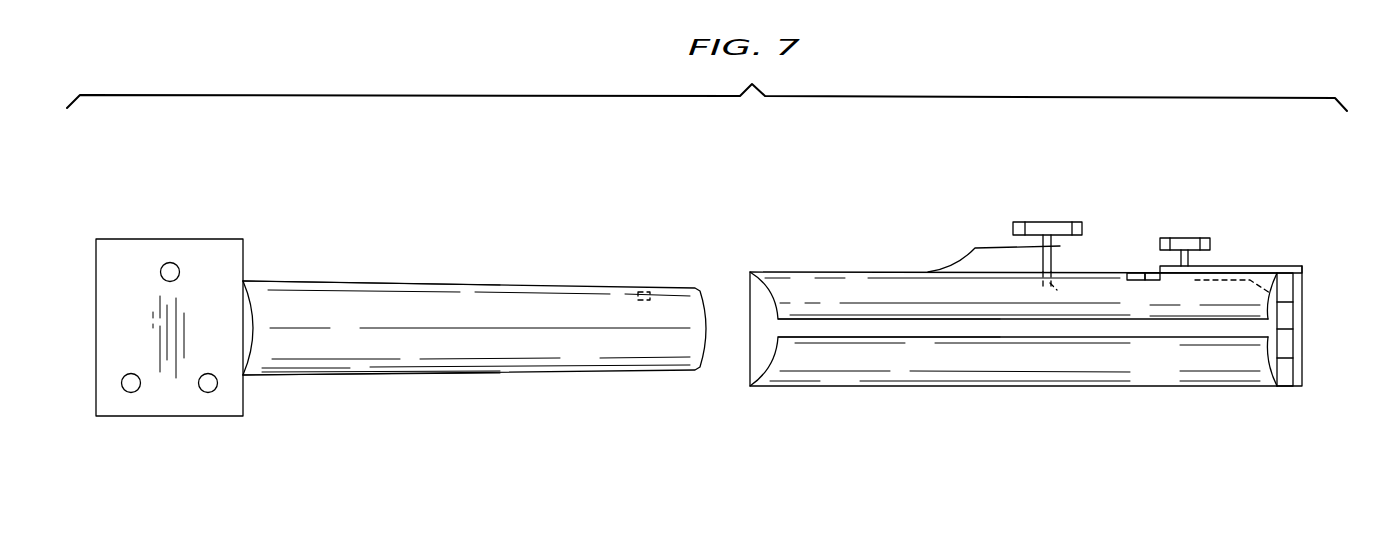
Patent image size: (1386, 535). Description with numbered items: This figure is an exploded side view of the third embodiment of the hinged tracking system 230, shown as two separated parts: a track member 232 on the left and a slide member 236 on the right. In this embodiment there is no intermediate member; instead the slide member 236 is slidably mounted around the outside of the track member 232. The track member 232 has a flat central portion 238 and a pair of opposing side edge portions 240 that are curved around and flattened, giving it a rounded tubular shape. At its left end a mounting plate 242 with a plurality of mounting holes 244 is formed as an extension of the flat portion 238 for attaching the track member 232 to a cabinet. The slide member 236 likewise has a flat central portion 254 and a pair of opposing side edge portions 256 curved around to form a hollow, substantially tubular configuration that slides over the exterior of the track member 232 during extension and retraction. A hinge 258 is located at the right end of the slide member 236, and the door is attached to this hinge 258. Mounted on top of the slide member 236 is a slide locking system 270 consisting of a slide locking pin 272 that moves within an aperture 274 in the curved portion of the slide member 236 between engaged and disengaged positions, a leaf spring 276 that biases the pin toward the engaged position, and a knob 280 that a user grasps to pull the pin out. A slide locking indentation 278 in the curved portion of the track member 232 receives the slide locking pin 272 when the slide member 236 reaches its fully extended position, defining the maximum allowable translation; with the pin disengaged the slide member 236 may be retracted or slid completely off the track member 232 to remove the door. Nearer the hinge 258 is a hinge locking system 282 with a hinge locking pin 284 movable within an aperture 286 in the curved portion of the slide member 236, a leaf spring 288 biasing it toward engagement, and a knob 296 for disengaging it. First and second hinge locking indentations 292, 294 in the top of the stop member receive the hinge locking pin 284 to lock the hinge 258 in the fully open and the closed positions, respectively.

The hinged tracking system 230 is at (720, 242).
The track member 232 is at (475, 298).
The slide member 236 is at (1000, 388).
The flat central portion 238 is at (483, 362).
The side edge portions 240 is at (340, 280).
The mounting plate 242 is at (200, 407).
The mounting holes 244 is at (133, 383).
The flat central portion 254 is at (803, 326).
The side edge portions 256 is at (852, 282).
The hinge 258 is at (1298, 390).
The slide locking system 270 is at (998, 203).
The slide locking pin 272 is at (1055, 262).
The aperture 274 is at (1057, 290).
The leaf spring 276 is at (985, 246).
The slide locking indentation 278 is at (642, 292).
The knob 280 is at (1047, 224).
The hinge locking system 282 is at (1297, 184).
The hinge locking pin 284 is at (1172, 250).
The aperture 286 is at (1185, 280).
The leaf spring 288 is at (1190, 275).
The first hinge locking indentation 292 is at (1152, 275).
The second hinge locking indentation 294 is at (1185, 275).
The knob 296 is at (1200, 236).